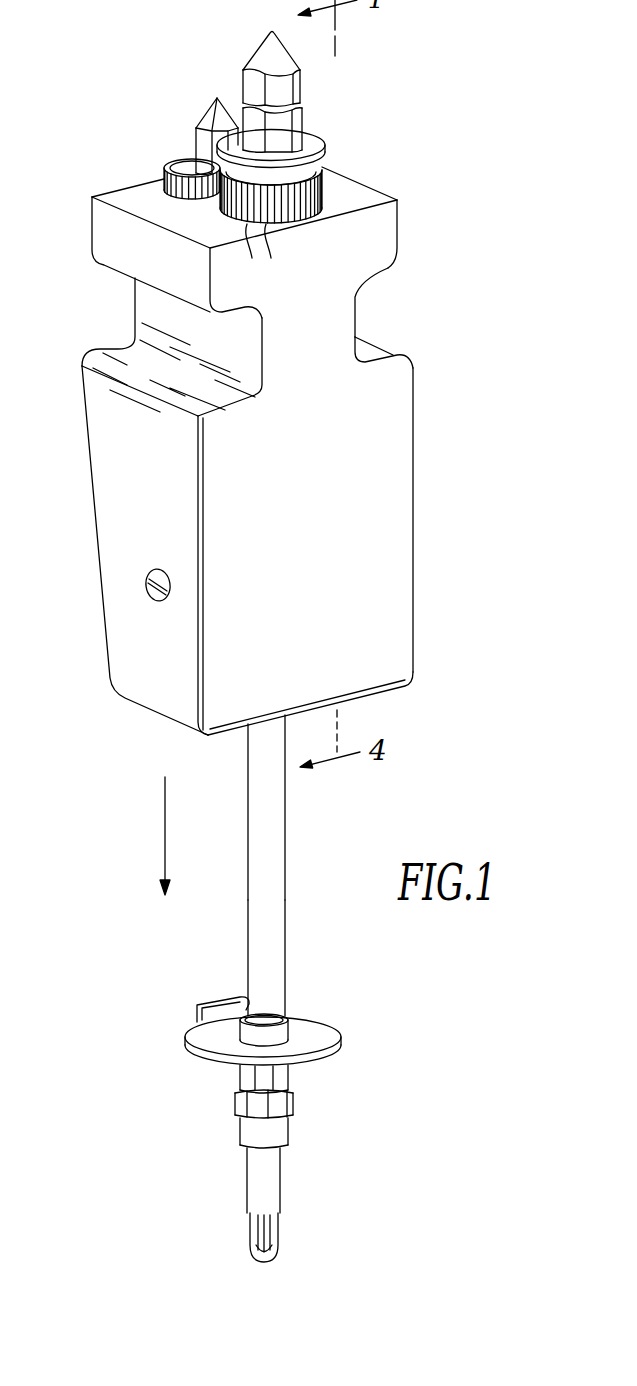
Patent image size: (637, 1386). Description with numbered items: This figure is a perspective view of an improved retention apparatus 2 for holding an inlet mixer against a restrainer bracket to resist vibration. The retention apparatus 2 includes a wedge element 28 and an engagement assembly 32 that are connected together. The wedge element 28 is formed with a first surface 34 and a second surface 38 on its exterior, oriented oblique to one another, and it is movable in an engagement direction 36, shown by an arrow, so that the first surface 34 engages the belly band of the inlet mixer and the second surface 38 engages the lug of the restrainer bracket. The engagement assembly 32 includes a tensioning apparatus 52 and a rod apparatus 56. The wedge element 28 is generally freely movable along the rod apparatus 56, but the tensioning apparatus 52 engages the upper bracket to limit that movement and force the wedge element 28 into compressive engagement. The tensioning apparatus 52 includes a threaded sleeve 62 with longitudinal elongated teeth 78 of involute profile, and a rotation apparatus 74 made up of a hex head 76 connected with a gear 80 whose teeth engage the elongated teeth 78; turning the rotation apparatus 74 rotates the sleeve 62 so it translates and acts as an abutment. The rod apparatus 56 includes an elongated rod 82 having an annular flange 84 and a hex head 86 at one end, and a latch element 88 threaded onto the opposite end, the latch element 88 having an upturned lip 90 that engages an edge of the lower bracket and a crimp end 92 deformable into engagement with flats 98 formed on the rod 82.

The retention apparatus 2 is at (405, 327).
The wedge element 28 is at (417, 460).
The engagement assembly 32 is at (287, 840).
The first surface 34 is at (402, 590).
The engagement direction 36 is at (165, 807).
The second surface 38 is at (90, 448).
The tensioning apparatus 52 is at (325, 198).
The rod apparatus 56 is at (308, 123).
The sleeve 62 is at (320, 182).
The rotation apparatus 74 is at (194, 132).
The hex head 76 is at (240, 128).
The elongated teeth 78 is at (259, 253).
The gear 80 is at (182, 172).
The elongated rod 82 is at (285, 938).
The annular flange 84 is at (320, 155).
The hex head 86 is at (297, 88).
The latch element 88 is at (343, 1040).
The upturned lip 90 is at (205, 1030).
The crimp end 92 is at (283, 1177).
The flats 98 is at (263, 1238).